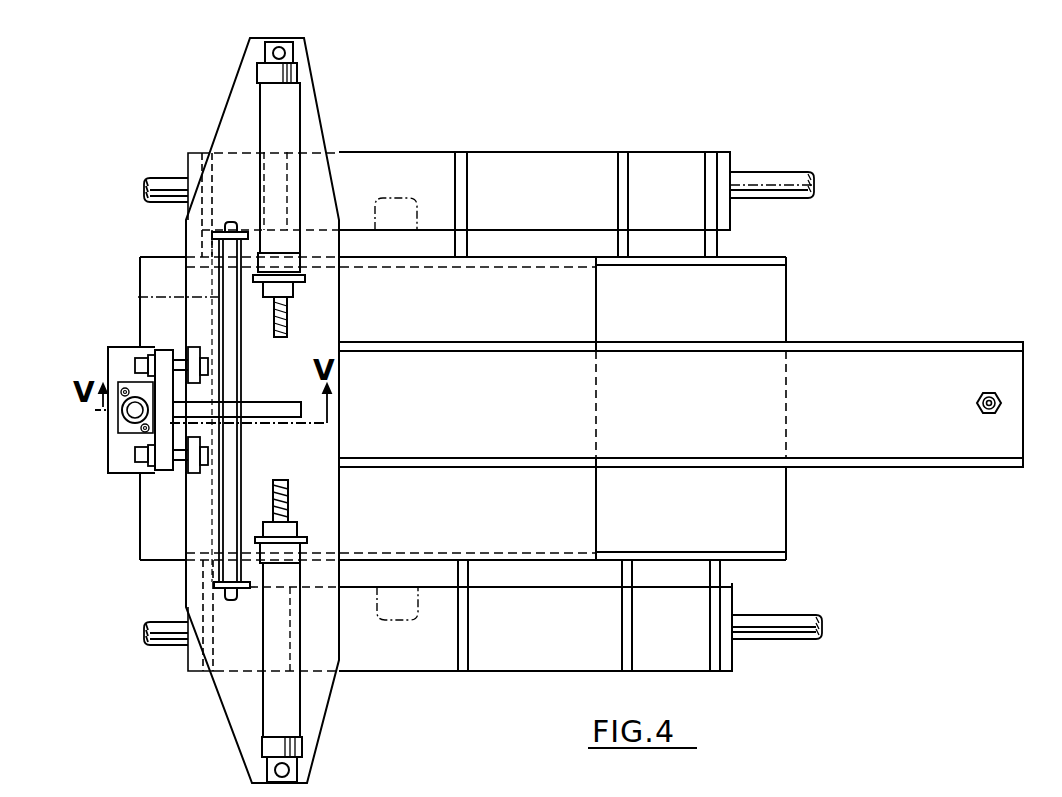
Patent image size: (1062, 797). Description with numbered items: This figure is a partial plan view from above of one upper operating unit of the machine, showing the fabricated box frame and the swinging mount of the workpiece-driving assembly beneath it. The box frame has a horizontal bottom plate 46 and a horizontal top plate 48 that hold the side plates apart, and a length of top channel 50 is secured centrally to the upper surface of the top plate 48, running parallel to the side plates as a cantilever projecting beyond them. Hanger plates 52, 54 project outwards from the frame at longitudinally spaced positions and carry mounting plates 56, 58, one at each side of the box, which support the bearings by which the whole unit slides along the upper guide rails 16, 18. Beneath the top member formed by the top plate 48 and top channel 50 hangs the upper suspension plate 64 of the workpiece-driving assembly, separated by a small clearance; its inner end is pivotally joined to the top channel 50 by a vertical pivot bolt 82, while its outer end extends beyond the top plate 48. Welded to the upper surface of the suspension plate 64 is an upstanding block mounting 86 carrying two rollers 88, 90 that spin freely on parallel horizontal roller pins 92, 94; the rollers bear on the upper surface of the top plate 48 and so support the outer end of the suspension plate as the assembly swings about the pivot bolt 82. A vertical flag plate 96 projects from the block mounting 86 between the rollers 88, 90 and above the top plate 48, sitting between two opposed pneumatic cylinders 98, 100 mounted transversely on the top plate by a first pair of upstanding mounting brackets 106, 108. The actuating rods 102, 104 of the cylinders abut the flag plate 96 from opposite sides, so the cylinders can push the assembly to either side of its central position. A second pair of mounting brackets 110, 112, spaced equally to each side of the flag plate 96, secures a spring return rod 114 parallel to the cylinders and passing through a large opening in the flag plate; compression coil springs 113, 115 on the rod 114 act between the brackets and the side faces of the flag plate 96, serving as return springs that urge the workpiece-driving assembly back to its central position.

The upper guide rail 16 is at (776, 628).
The upper guide rail 18 is at (773, 180).
The horizontal bottom plate 46 is at (772, 298).
The horizontal top plate 48 is at (578, 301).
The top channel 50 is at (937, 357).
The hanger plate 52 is at (462, 660).
The hanger plate 54 is at (620, 180).
The mounting plate 56 is at (591, 647).
The mounting plate 58 is at (507, 168).
The upper suspension plate 64 is at (120, 385).
The vertical pivot bolt 82 is at (1001, 399).
The block mounting 86 is at (160, 440).
The roller 88 is at (195, 474).
The roller 90 is at (195, 358).
The roller pin 92 is at (135, 455).
The roller pin 94 is at (136, 365).
The flag plate 96 is at (282, 404).
The pneumatic cylinder 98 is at (295, 700).
The pneumatic cylinder 100 is at (285, 116).
The actuating rod 102 is at (290, 488).
The actuating rod 104 is at (288, 318).
The mounting bracket 106 is at (307, 538).
The mounting bracket 108 is at (305, 278).
The mounting bracket 110 is at (225, 586).
The mounting bracket 112 is at (215, 238).
The compression coil spring 113 is at (218, 514).
The spring return rod 114 is at (224, 282).
The compression coil spring 115 is at (216, 295).